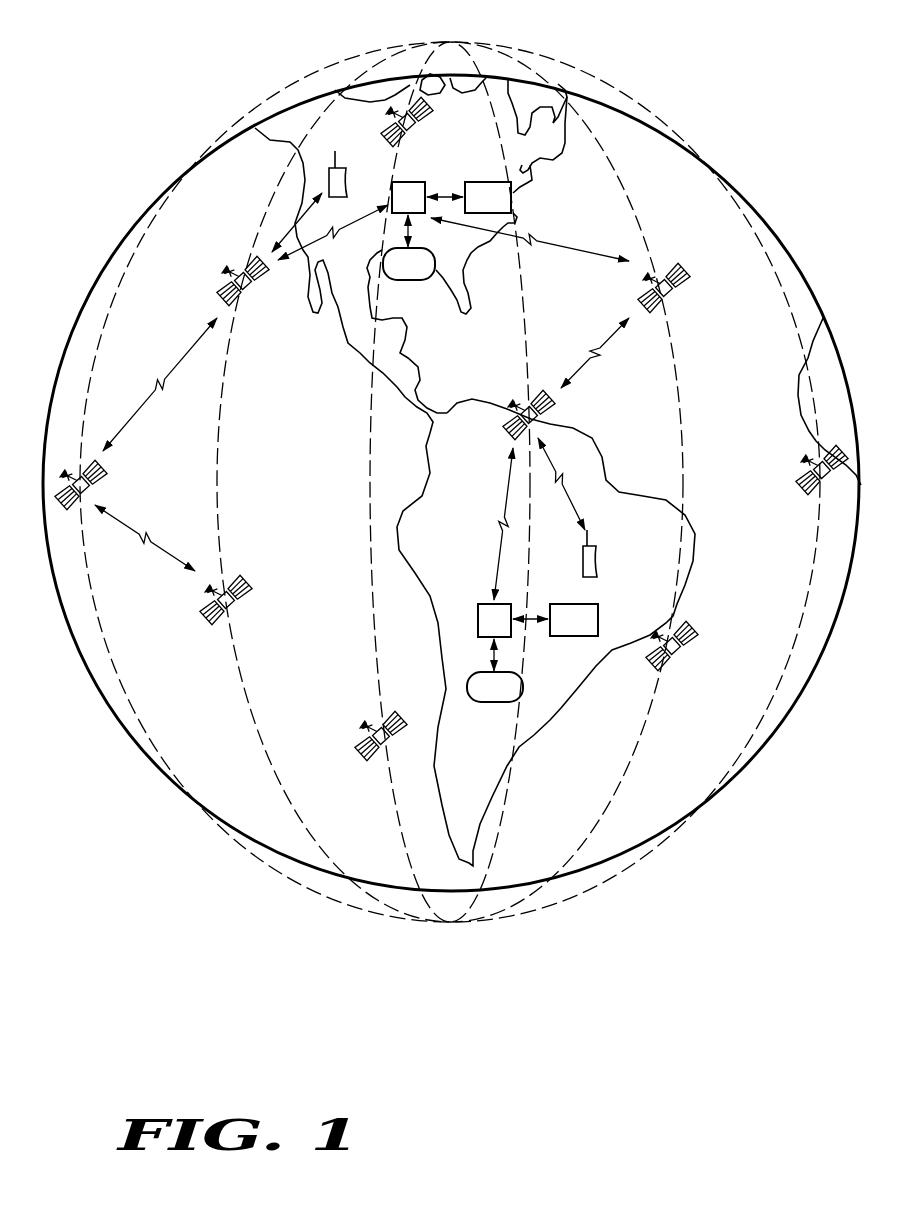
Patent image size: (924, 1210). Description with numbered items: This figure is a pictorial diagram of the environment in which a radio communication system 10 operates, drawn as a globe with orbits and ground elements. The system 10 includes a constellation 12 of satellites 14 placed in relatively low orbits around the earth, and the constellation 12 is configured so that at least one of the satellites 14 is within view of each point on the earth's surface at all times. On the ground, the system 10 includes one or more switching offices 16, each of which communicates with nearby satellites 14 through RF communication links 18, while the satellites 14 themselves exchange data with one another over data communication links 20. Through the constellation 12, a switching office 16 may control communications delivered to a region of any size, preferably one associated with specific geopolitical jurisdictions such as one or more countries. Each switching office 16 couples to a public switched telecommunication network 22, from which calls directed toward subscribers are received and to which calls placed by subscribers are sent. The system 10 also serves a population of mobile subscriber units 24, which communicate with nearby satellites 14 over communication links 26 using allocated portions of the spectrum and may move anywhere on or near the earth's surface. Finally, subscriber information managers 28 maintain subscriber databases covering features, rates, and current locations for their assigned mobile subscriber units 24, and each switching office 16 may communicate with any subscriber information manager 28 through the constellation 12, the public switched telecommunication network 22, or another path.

The radio communication system 10 is at (452, 1040).
The constellation 12 is at (451, 44).
The satellites 14 is at (690, 262).
The switching office 16 is at (411, 181).
The RF communication links 18 is at (322, 238).
The data communication links 20 is at (182, 362).
The public switched telecommunication network 22 is at (412, 281).
The mobile subscriber unit 24 is at (343, 158).
The communication links 26 is at (290, 236).
The subscriber information manager 28 is at (513, 207).